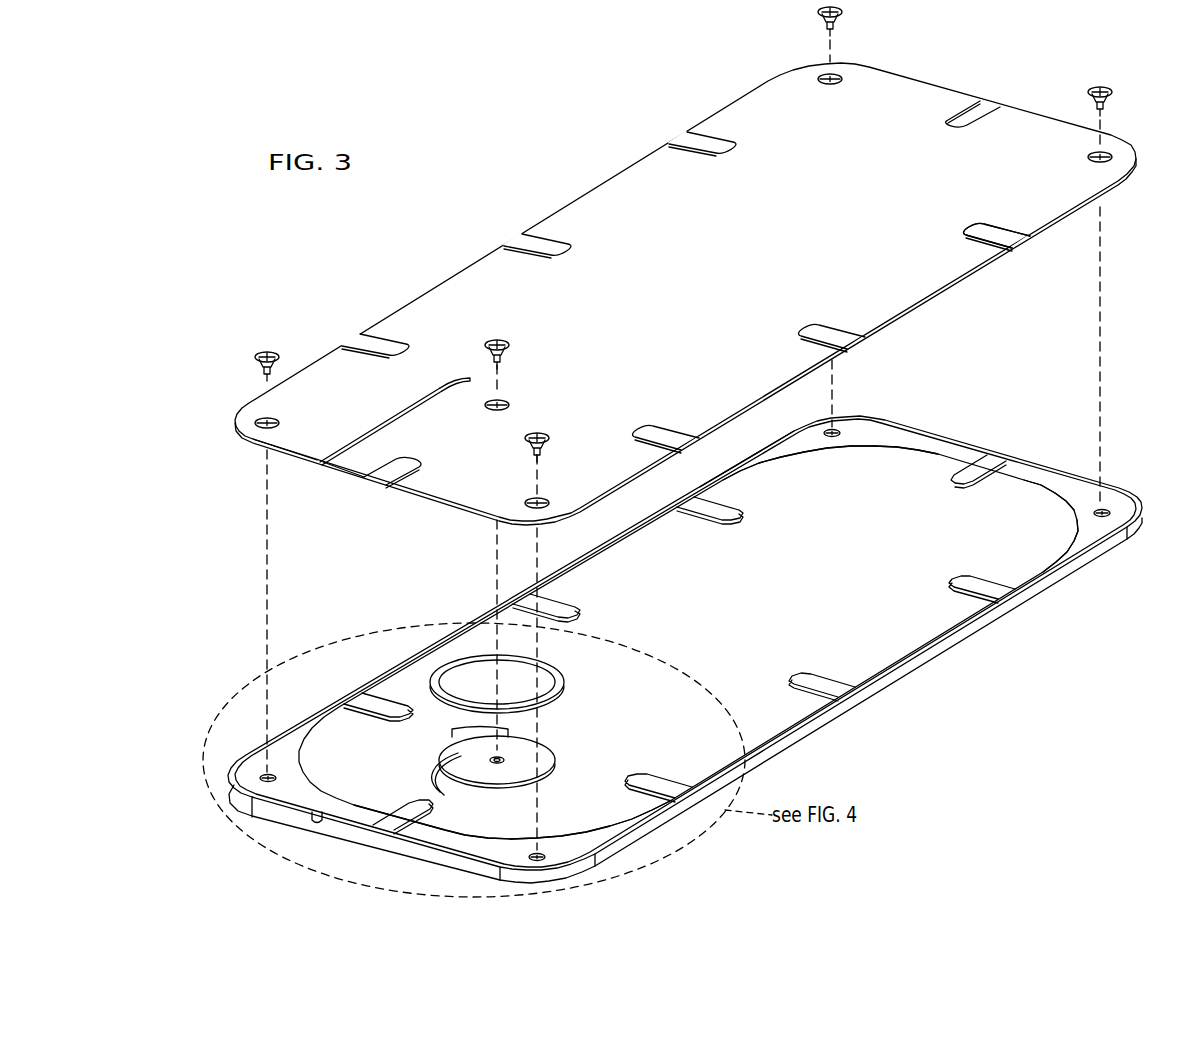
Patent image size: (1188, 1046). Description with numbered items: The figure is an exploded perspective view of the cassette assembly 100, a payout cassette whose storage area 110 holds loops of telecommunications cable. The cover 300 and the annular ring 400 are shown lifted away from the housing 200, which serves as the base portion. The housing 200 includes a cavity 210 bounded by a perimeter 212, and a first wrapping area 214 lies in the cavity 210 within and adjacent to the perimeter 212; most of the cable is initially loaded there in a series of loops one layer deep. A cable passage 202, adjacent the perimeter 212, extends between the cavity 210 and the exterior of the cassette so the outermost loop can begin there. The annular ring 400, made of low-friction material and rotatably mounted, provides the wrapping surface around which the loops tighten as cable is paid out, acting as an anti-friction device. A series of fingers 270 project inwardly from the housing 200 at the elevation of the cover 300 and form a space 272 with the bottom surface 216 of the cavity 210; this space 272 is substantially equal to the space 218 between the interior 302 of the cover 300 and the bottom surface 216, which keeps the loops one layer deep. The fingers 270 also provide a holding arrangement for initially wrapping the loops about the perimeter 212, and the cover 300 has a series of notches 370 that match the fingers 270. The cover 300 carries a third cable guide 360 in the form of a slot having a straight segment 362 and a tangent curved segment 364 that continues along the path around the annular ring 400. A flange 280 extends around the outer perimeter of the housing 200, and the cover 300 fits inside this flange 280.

The cassette assembly 100 is at (461, 158).
The storage area 110 is at (907, 472).
The housing 200 is at (1139, 478).
The cable passage 202 is at (757, 450).
The cavity 210 is at (1025, 507).
The perimeter 212 is at (847, 455).
The first wrapping area 214 is at (1053, 543).
The bottom surface 216 is at (812, 585).
The space 218 is at (1062, 490).
The fingers 270 is at (843, 683).
The space 272 is at (985, 597).
The flange 280 is at (953, 440).
The cover 300 is at (1040, 104).
The interior 302 is at (957, 283).
The third cable guide 360 is at (320, 465).
The straight segment 362 is at (338, 445).
The curved segment 364 is at (460, 377).
The notches 370 is at (1010, 232).
The annular ring 400 is at (458, 643).